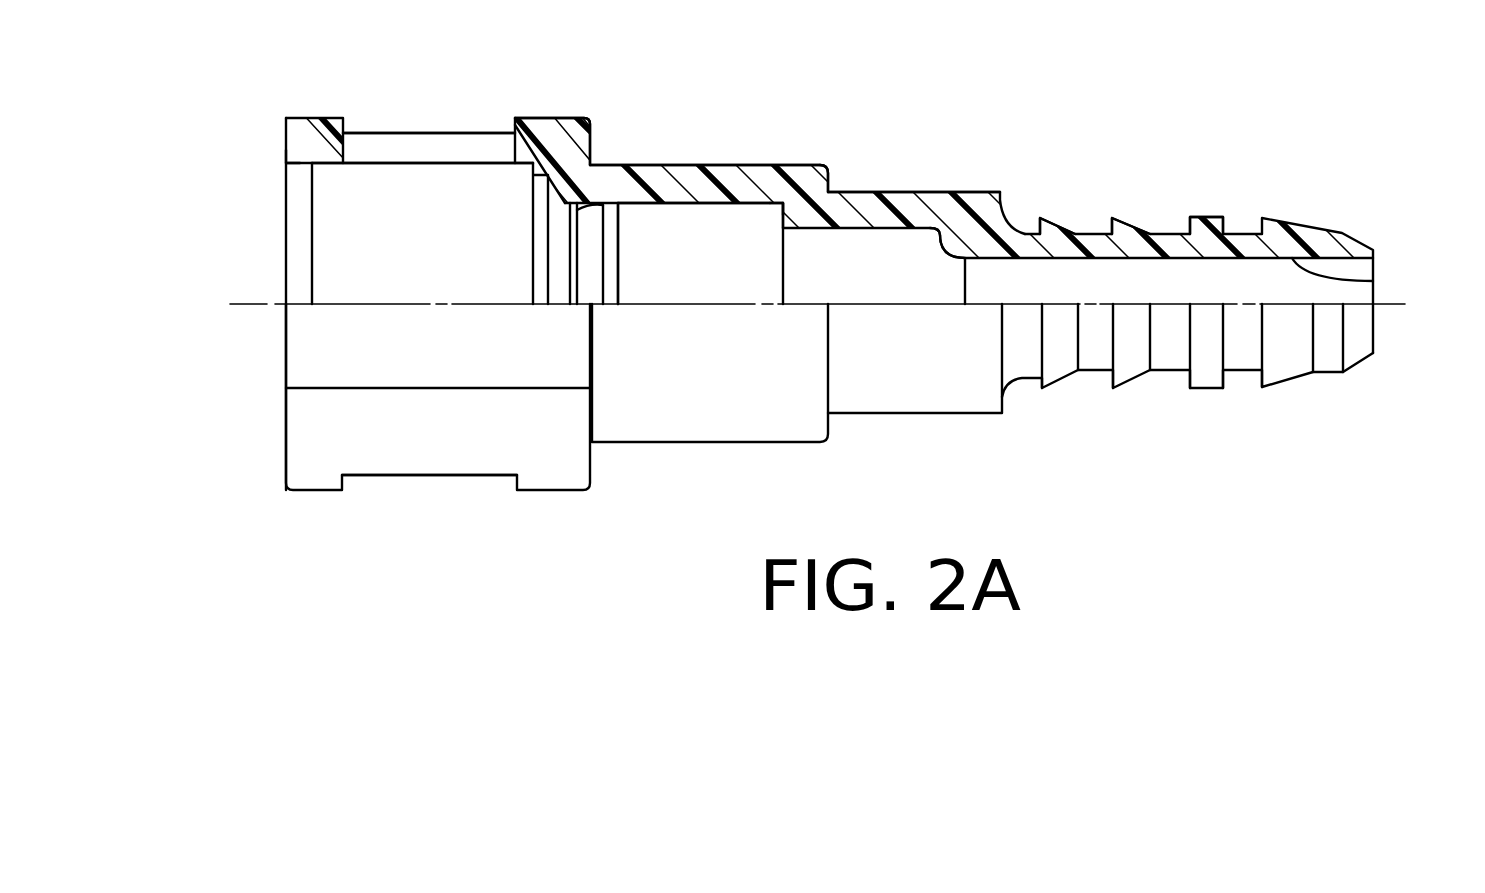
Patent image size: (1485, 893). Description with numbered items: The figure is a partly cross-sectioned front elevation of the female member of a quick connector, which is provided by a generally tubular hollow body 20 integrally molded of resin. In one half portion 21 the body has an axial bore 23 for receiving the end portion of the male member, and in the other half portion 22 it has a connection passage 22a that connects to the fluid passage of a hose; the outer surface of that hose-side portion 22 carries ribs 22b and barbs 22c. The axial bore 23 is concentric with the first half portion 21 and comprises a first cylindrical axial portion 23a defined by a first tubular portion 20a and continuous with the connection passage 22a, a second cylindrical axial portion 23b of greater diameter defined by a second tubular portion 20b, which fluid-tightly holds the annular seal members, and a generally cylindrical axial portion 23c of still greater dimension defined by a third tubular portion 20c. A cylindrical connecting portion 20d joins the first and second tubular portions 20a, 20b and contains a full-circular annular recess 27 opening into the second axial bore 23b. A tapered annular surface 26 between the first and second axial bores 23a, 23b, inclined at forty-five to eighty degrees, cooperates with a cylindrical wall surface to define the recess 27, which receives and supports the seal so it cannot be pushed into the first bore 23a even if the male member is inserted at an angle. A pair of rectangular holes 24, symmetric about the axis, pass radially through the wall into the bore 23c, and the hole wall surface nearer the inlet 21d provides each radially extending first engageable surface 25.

The tubular hollow body 20 is at (953, 212).
The first tubular portion 20a is at (867, 207).
The second tubular portion 20b is at (655, 175).
The third tubular portion 20c is at (528, 130).
The cylindrical connecting portion 20d is at (811, 182).
The first half portion 21 is at (560, 102).
The inlet 21d is at (288, 158).
The second half portion 22 is at (1333, 220).
The connection passage 22a is at (1348, 281).
The nipple rib 22b is at (1243, 233).
The nipple barbs 22c is at (1058, 223).
The axial bore 23 is at (347, 266).
The first cylindrical axial portion 23a is at (892, 260).
The second cylindrical axial portion 23b is at (687, 247).
The generally cylindrical axial portion 23c is at (382, 210).
The rectangular openings or holes 24 is at (483, 143).
The first engageable surfaces 25 is at (347, 127).
The annular surface 26 is at (787, 206).
The annular recess 27 is at (777, 208).